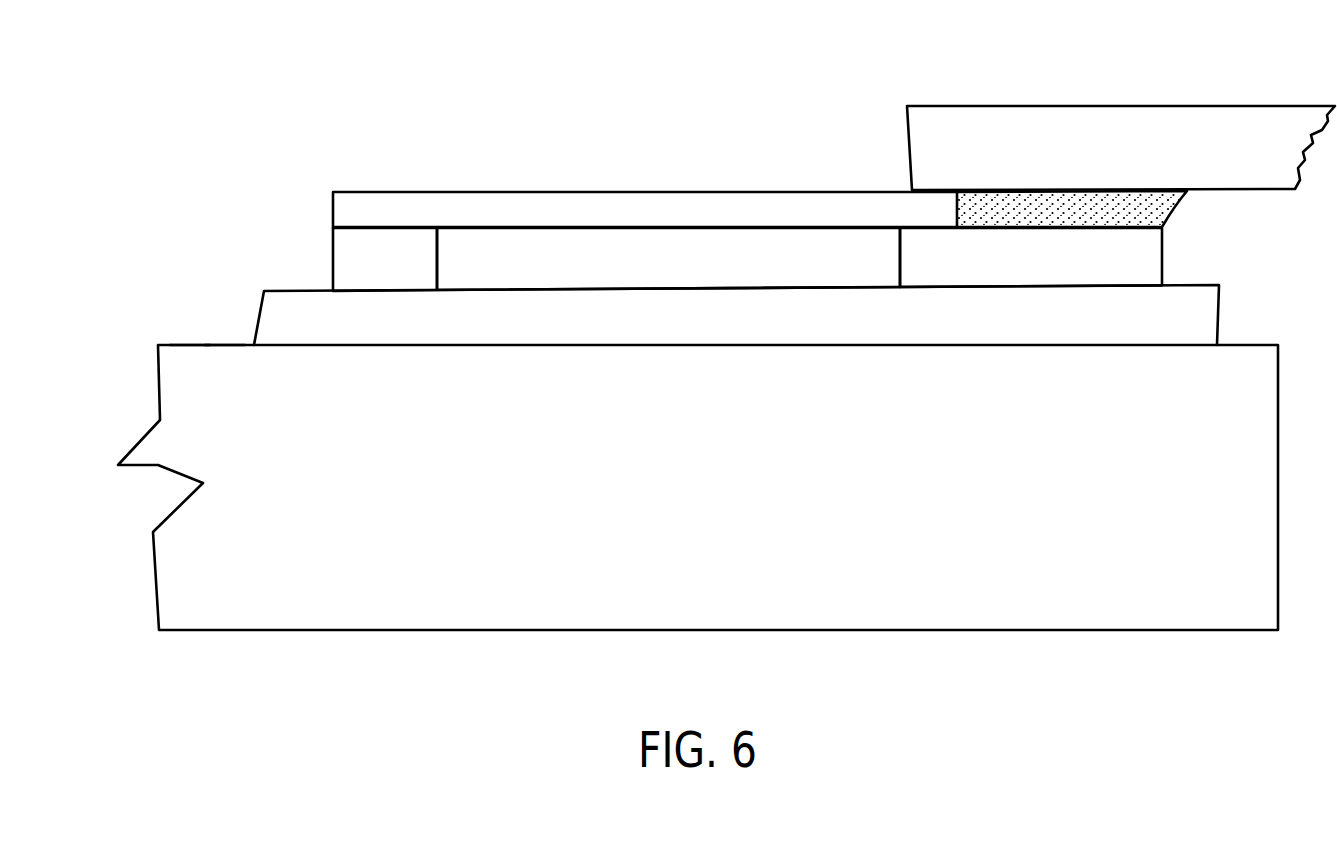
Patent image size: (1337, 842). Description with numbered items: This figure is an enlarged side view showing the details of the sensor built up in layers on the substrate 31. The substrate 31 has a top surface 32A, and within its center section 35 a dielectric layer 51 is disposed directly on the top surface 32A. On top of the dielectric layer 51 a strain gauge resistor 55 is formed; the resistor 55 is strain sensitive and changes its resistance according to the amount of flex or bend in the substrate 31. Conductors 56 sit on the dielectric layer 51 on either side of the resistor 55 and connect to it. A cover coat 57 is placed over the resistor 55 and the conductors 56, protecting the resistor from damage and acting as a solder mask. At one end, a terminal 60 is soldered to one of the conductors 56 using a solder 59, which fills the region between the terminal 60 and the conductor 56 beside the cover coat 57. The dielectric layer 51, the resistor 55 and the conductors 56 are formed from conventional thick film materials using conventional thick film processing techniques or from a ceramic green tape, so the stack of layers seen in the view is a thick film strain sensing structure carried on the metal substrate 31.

The substrate 31 is at (679, 585).
The dielectric layer 51 is at (674, 340).
The strain gauge resistor 55 is at (645, 283).
The conductors 56 is at (398, 282).
The cover coat 57 is at (515, 192).
The solder 59 is at (1160, 204).
The terminals 60 is at (1097, 130).
The center section 35 is at (188, 342).
The top surface 32A is at (223, 343).